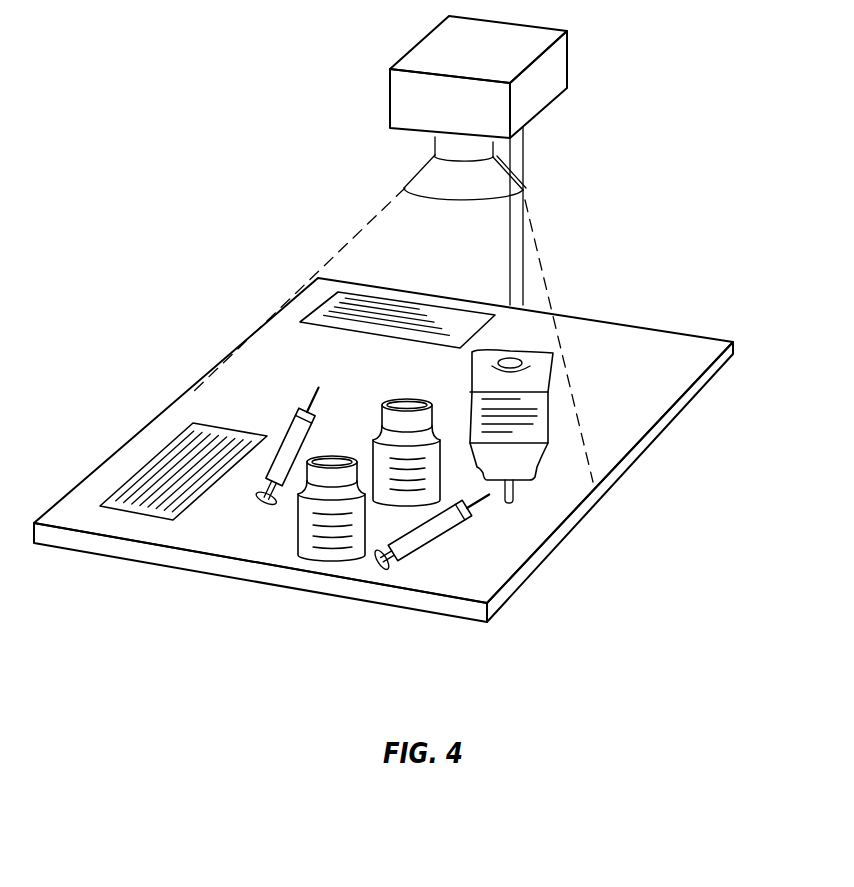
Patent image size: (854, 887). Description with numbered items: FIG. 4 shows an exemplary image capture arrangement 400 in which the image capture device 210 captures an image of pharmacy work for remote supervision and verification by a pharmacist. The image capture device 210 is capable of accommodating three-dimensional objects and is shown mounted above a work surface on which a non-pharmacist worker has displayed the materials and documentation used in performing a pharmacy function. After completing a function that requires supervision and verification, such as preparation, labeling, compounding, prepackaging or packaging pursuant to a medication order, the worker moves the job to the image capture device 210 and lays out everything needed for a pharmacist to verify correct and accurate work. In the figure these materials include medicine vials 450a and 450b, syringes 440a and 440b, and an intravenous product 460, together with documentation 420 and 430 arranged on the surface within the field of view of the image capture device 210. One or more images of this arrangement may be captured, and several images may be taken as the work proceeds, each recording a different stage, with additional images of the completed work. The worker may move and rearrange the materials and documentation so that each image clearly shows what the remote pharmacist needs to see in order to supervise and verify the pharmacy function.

The imaging system / setup 400 is at (224, 155).
The image capture device 210 is at (458, 160).
The documentation 420 is at (182, 462).
The documentation 430 is at (382, 326).
The syringe 440a is at (273, 447).
The syringe 440b is at (432, 534).
The medicine vial 450a is at (379, 452).
The medicine vial 450b is at (297, 510).
The intravenous product 460 is at (481, 426).